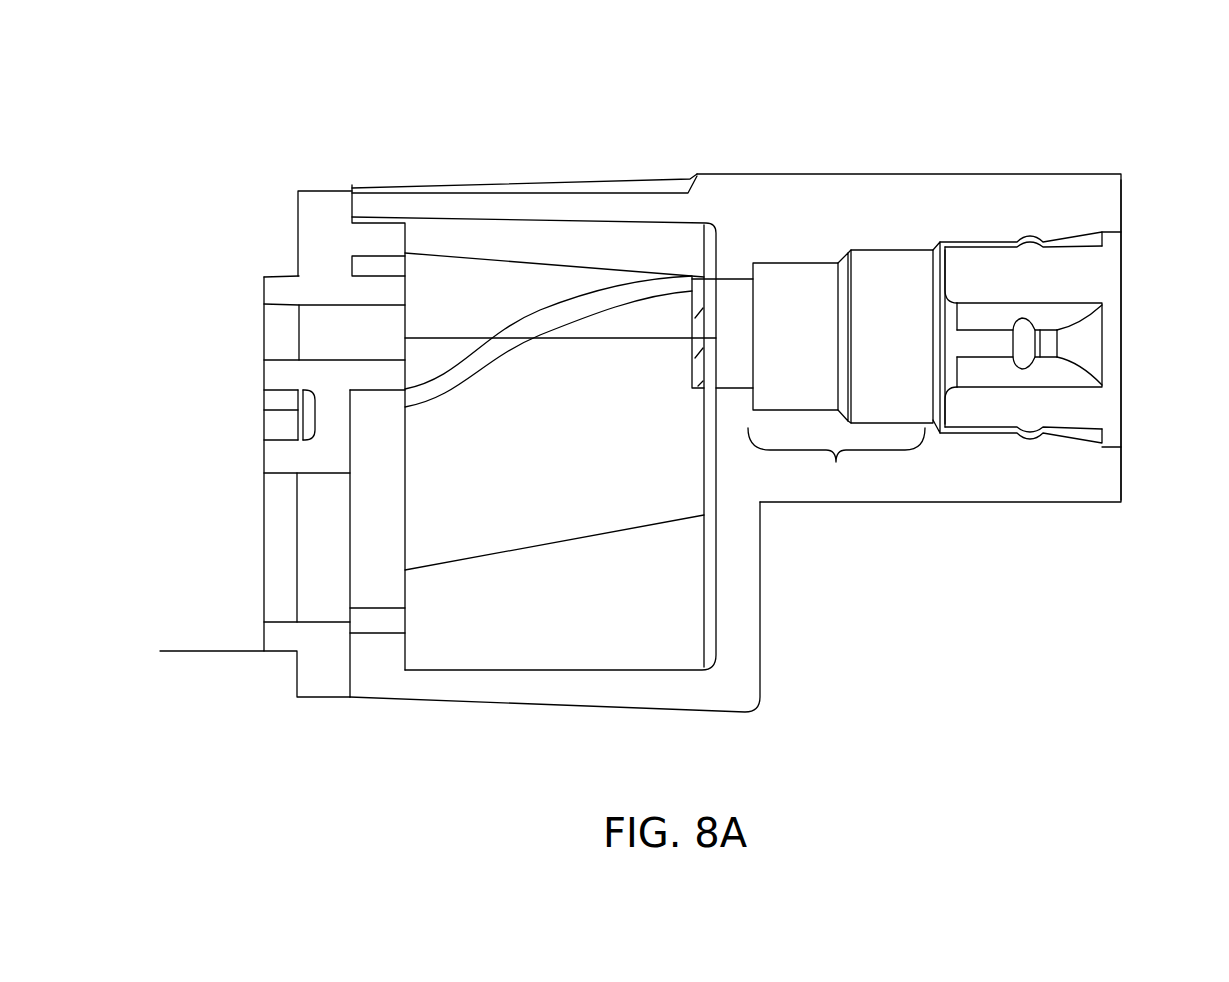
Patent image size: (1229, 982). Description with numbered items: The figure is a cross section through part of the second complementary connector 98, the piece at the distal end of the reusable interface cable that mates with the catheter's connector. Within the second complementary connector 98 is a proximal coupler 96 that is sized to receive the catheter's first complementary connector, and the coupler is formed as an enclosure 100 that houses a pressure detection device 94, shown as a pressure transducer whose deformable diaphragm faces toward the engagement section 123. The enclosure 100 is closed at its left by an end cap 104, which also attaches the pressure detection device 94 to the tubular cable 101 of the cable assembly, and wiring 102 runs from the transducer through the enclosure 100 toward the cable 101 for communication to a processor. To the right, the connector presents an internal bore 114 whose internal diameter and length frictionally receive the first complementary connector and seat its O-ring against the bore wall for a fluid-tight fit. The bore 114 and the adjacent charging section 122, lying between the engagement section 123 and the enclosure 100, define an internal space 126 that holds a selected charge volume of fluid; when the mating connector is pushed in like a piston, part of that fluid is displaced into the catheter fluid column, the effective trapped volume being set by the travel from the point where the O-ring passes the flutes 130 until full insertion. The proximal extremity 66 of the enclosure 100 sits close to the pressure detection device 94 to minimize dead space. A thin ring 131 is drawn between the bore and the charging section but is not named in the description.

The second complementary connector 98 is at (730, 86).
The pressure detection device 94 is at (700, 277).
The proximal coupler 96 is at (1060, 192).
The end cap 104 is at (328, 207).
The tubular cable 101 is at (264, 277).
The proximal extremity 66 is at (733, 279).
The internal bore 114 is at (788, 277).
The flange ring 131 is at (843, 262).
The charging section 122 is at (893, 267).
The engagement section 123 is at (1122, 277).
The wiring 102 is at (460, 373).
The internal space 126 is at (836, 465).
The flutes 130 is at (938, 430).
The enclosure 100 is at (762, 563).